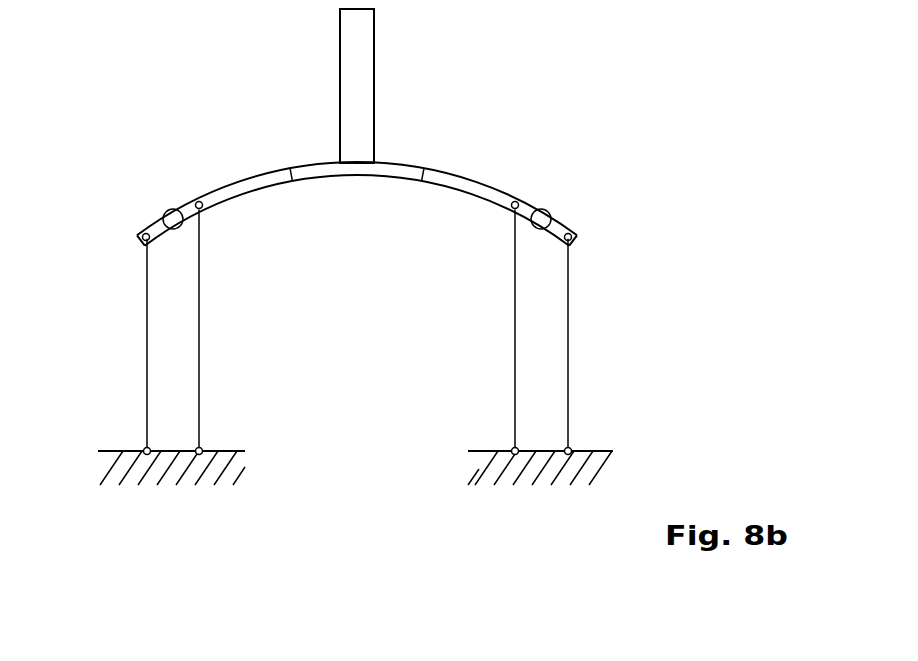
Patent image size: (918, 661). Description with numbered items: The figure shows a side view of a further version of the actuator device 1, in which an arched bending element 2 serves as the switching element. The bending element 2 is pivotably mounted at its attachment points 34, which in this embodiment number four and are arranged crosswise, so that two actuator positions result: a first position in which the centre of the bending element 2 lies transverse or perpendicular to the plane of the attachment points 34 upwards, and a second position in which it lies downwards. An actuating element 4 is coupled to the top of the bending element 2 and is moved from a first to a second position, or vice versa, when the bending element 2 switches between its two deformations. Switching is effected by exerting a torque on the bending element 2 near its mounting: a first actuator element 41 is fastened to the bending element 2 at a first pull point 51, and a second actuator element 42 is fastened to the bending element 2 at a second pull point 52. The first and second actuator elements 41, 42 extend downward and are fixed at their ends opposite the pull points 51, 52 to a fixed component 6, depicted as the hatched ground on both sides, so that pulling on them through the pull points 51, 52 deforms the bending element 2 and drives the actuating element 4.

The actuator device 1 is at (607, 68).
The bending element 2 is at (463, 186).
The actuating element 4 is at (362, 48).
The fixed component 6 is at (224, 451).
The attachment points 34 is at (168, 209).
The first actuator element 41 is at (200, 322).
The second actuator element 42 is at (146, 322).
The first pull point 51 is at (198, 201).
The second pull point 52 is at (141, 233).